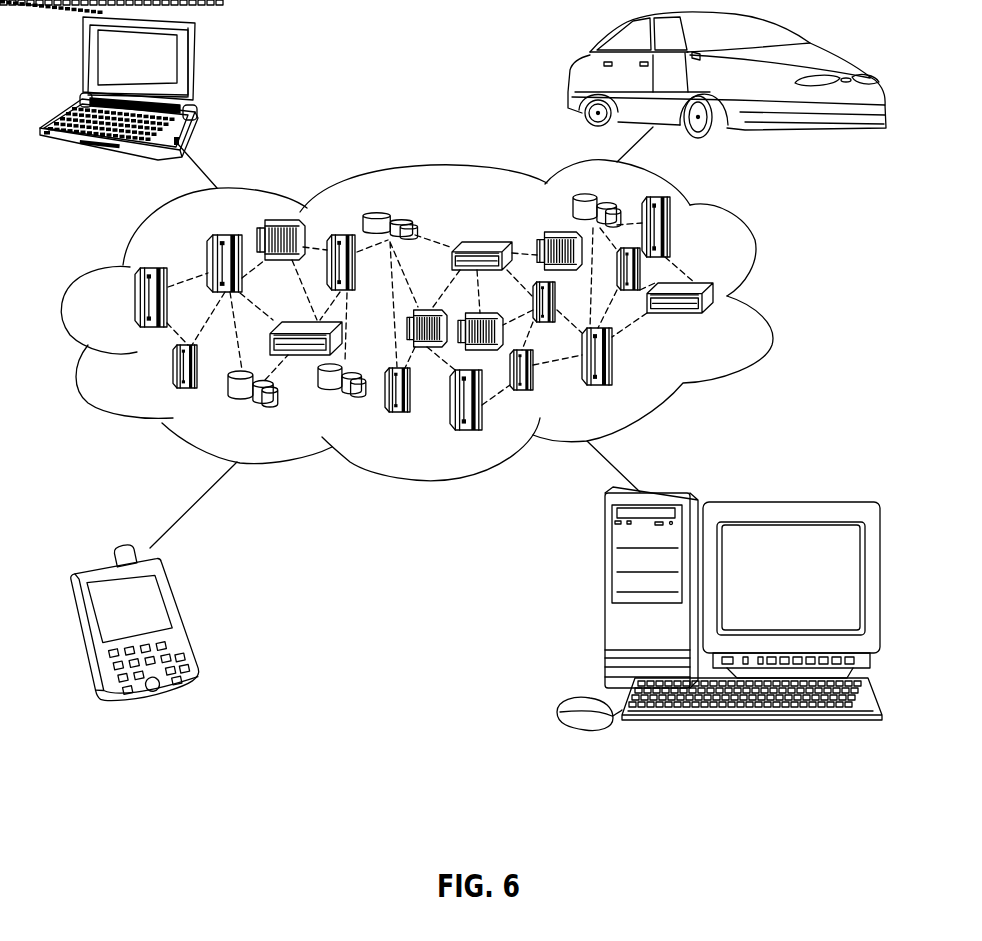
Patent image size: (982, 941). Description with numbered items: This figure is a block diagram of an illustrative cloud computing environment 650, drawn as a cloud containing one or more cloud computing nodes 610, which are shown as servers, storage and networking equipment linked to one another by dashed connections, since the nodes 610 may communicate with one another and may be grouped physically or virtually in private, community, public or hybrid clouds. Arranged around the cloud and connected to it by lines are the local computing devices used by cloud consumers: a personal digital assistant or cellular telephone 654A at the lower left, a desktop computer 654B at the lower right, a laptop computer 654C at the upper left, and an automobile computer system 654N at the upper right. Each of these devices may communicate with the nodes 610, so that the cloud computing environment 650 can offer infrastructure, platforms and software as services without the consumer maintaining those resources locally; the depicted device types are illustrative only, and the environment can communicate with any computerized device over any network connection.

The laptop computer 654C is at (197, 65).
The automobile computer system 654N is at (580, 68).
The cloud computing environment 650 is at (757, 262).
The cloud computing nodes 610 is at (732, 318).
The personal digital assistant (PDA) or cellular telephone 654A is at (183, 620).
The desktop computer 654B is at (605, 602).